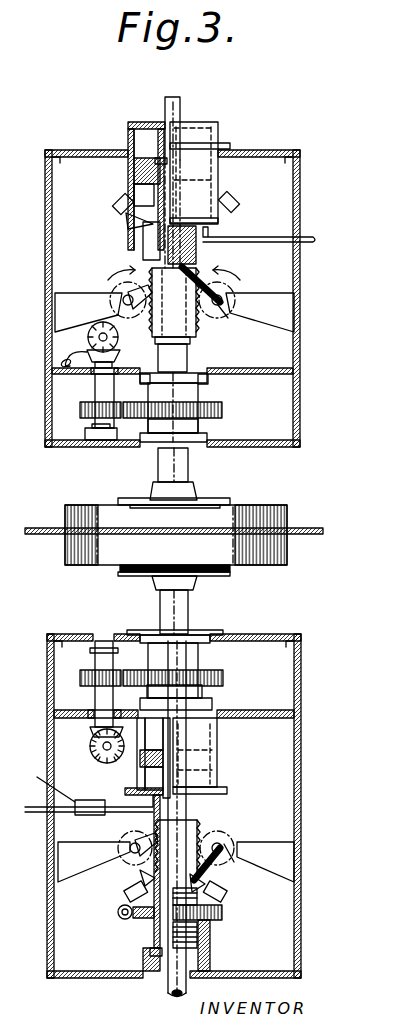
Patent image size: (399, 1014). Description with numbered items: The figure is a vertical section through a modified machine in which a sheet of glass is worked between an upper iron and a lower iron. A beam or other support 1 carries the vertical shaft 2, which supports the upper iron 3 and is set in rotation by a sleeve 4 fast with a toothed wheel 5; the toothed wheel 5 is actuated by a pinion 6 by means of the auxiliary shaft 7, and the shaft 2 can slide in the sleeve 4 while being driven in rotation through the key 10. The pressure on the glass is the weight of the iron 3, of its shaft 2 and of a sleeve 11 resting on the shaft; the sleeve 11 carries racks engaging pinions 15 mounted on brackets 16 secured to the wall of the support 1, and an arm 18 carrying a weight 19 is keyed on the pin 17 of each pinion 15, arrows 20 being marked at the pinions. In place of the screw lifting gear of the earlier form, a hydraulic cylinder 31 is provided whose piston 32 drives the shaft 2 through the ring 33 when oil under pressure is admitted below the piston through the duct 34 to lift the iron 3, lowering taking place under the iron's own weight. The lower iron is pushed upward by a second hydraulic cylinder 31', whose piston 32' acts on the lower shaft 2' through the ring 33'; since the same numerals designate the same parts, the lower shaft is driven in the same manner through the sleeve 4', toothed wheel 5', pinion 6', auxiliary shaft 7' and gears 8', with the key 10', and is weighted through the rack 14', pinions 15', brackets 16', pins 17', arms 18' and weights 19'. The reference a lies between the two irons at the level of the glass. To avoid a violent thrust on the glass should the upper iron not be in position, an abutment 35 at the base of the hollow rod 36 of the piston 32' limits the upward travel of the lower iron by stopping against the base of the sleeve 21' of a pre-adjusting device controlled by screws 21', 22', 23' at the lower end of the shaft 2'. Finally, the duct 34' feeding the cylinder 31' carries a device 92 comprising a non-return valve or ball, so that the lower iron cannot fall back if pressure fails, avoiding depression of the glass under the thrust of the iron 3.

The beam or support 1 is at (45, 282).
The vertical shaft 2 is at (191, 282).
The shaft 2' is at (191, 797).
The upper iron 3 is at (262, 512).
The cross shaft a is at (302, 528).
The sleeve 4 is at (192, 407).
The lower hub 4' is at (187, 670).
The toothed wheel 5 is at (190, 411).
The lower gear 5' is at (195, 678).
The pinion 6 is at (67, 411).
The lower pinion 6' is at (66, 678).
The auxiliary shaft 7 is at (90, 381).
The lower counter shaft 7' is at (91, 684).
The bevel gear 8' is at (91, 744).
The key 10 is at (196, 427).
The lower collar 10' is at (204, 697).
The sleeve 11 is at (180, 320).
The stop 14' is at (120, 881).
The pinion 15 is at (175, 292).
The lower pawl 15' is at (177, 850).
The bracket 16 is at (171, 313).
The lower pawl arm 16' is at (172, 861).
The pin 17 is at (180, 303).
The lower pawl pivot 17' is at (177, 853).
The arm 18 is at (116, 225).
The lower release wedge 18' is at (224, 879).
The weight 19 is at (176, 202).
The lower release lever 19' is at (169, 899).
The direction of rotation 20 is at (180, 264).
The sleeve 21' is at (204, 929).
The screw 22' is at (221, 915).
The screw 23' is at (116, 928).
The hydraulic cylinder 31 is at (118, 182).
The hydraulic cylinder 31' is at (213, 758).
The piston 32 is at (126, 191).
The piston 32' is at (123, 757).
The ring 33 is at (147, 171).
The ring 33' is at (220, 754).
The duct 34 is at (266, 223).
The duct 34' is at (76, 806).
The abutment 35 is at (155, 972).
The hollow rod 36 is at (197, 822).
The non-return device 92 is at (47, 781).